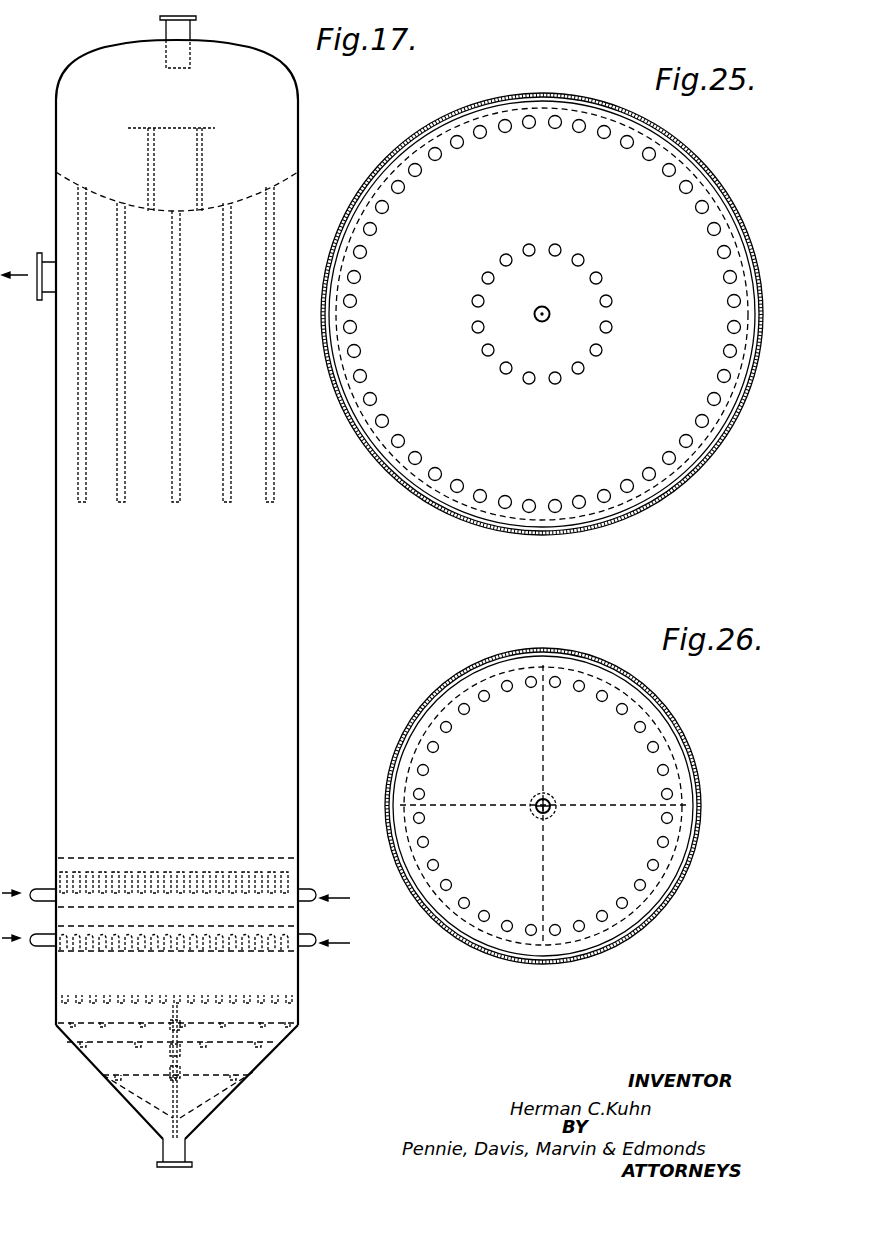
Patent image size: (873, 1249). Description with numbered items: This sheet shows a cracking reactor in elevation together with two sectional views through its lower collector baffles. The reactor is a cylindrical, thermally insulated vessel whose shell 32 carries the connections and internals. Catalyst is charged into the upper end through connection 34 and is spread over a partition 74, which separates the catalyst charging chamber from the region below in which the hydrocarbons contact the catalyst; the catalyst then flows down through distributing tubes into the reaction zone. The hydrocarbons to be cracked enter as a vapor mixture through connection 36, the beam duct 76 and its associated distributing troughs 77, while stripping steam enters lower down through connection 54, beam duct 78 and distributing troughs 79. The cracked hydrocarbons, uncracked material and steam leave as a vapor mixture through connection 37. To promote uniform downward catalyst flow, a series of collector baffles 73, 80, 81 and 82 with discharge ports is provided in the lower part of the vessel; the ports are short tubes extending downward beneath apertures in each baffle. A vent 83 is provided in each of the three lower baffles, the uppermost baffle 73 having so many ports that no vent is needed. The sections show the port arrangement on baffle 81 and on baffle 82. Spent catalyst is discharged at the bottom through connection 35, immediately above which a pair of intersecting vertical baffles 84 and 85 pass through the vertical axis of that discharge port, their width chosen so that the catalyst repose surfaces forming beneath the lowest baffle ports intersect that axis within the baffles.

In FIG. 17, the vessel shell 32 is at (56, 650).
In FIG. 25, the vessel shell 32 is at (455, 517).
In FIG. 26, the vessel shell 32 is at (390, 764).
In FIG. 17, the connection 34 is at (160, 28).
In FIG. 17, the connection 35 is at (170, 1152).
In FIG. 26, the connection 35 is at (553, 796).
In FIG. 17, the connection 36 is at (324, 866).
In FIG. 17, the connection 37 is at (46, 300).
In FIG. 17, the connection 54 is at (325, 972).
In FIG. 17, the collector baffle 73 is at (236, 995).
In FIG. 17, the partition 74 is at (214, 208).
In FIG. 17, the beam duct 76 is at (215, 855).
In FIG. 17, the distributing troughs 77 is at (130, 868).
In FIG. 17, the beam duct 78 is at (104, 952).
In FIG. 17, the distributing troughs 79 is at (136, 952).
In FIG. 17, the collector baffle 80 is at (284, 1023).
In FIG. 17, the collector baffle 81 is at (273, 1050).
In FIG. 25, the collector baffle 81 is at (620, 457).
In FIG. 17, the collector baffle 82 is at (262, 1076).
In FIG. 26, the collector baffle 82 is at (622, 885).
In FIG. 25, the vent 83 is at (537, 323).
In FIG. 26, the vent 83 is at (538, 812).
In FIG. 17, the vertical baffle 84 is at (130, 1113).
In FIG. 26, the vertical baffle 84 is at (462, 808).
In FIG. 17, the vertical baffle 85 is at (218, 1122).
In FIG. 26, the vertical baffle 85 is at (545, 870).